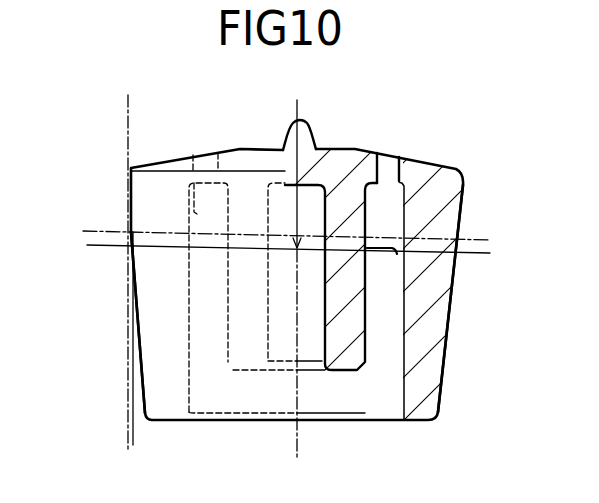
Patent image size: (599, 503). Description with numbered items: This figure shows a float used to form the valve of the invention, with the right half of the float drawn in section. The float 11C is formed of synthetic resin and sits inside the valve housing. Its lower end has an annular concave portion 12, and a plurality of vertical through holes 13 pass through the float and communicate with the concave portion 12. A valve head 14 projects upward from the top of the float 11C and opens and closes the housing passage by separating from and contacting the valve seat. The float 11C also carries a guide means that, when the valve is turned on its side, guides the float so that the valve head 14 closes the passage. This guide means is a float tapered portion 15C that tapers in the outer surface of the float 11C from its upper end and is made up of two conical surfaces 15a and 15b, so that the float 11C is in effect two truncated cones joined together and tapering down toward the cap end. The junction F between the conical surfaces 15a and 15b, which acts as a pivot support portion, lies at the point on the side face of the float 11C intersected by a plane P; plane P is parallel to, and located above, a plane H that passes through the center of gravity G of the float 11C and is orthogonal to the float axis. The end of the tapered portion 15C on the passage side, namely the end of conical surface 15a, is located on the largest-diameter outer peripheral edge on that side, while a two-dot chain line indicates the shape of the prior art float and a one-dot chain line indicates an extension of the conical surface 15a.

The float 11C is at (449, 189).
The annular concave portion 12 is at (380, 362).
The vertical through holes 13 is at (219, 163).
The valve head 14 is at (306, 127).
The conical surface 15a is at (128, 189).
The conical surface 15b is at (133, 353).
The float tapered portion 15C is at (128, 305).
The junction (pivot support portion) F is at (128, 230).
The plane P is at (484, 240).
The plane H is at (472, 254).
The center of gravity G is at (297, 249).